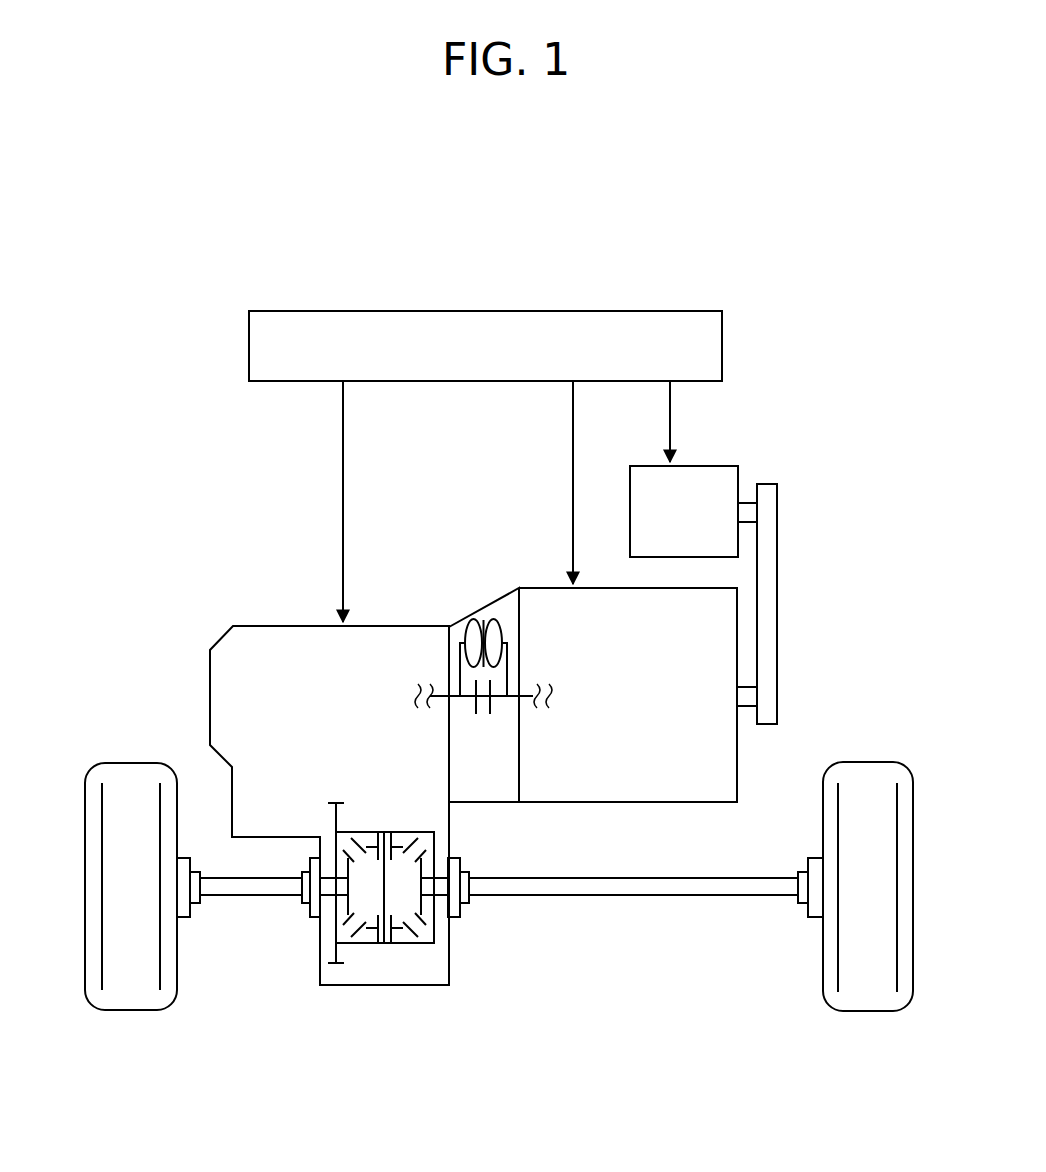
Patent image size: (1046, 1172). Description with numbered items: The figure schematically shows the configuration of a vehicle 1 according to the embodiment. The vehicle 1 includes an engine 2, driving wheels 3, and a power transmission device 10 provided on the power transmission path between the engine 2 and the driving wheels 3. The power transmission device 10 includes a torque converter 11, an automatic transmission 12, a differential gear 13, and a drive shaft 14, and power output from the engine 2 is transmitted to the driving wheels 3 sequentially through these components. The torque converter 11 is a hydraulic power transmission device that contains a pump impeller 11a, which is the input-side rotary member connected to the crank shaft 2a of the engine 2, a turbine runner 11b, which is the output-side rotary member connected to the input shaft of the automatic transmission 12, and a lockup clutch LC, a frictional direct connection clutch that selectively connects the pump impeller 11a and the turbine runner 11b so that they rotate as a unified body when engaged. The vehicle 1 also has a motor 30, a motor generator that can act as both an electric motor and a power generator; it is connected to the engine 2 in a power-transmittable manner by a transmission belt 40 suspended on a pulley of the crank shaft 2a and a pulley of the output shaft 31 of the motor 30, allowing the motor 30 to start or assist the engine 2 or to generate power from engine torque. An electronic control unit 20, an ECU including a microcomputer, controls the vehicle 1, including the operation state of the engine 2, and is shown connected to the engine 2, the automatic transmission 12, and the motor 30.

The vehicle 1 is at (628, 170).
The engine 2 is at (744, 770).
The crank shaft 2a is at (748, 708).
The driving wheels 3 is at (133, 1012).
The power transmission device 10 is at (236, 579).
The torque converter 11 is at (466, 693).
The pump impeller 11a is at (480, 620).
The turbine runner 11b is at (483, 622).
The automatic transmission 12 is at (283, 625).
The differential gear 13 is at (387, 958).
The drive shaft 14 is at (252, 900).
The electronic control unit 20 is at (657, 308).
The motor 30 is at (700, 464).
The output shaft 31 is at (746, 503).
The transmission belt 40 is at (778, 600).
The lockup clutch LC is at (484, 722).